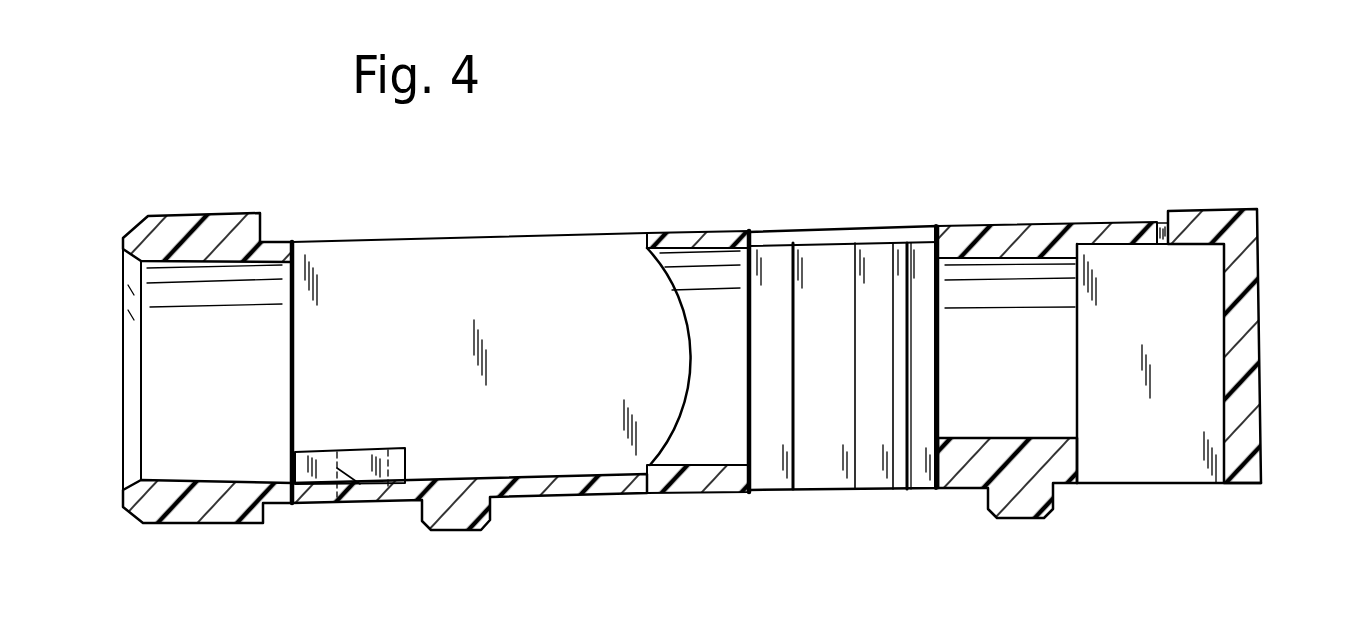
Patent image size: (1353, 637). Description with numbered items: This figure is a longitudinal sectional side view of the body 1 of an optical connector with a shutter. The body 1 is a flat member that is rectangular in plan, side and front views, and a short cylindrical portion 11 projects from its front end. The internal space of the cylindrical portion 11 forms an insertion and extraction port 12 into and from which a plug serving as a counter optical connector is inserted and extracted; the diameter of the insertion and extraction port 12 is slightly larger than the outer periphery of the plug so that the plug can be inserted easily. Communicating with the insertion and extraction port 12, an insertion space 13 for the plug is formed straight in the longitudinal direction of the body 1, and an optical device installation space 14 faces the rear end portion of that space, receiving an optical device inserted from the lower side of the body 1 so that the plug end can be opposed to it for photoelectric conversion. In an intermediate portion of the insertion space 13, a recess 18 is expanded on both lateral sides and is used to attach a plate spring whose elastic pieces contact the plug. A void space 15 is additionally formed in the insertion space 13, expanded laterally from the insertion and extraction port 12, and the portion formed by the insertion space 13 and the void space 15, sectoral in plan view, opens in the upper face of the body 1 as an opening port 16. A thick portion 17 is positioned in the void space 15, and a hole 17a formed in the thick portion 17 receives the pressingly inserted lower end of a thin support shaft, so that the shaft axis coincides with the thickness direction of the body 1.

The body 1 is at (1068, 225).
The cylindrical portion 11 is at (210, 213).
The insertion and extraction port 12 is at (222, 455).
The insertion space 13 is at (715, 437).
The optical device installation space 14 is at (1200, 347).
The void space 15 is at (605, 448).
The opening port 16 is at (575, 238).
The thick portion 17 is at (405, 463).
The hole 17a is at (360, 484).
The recess 18 is at (823, 240).